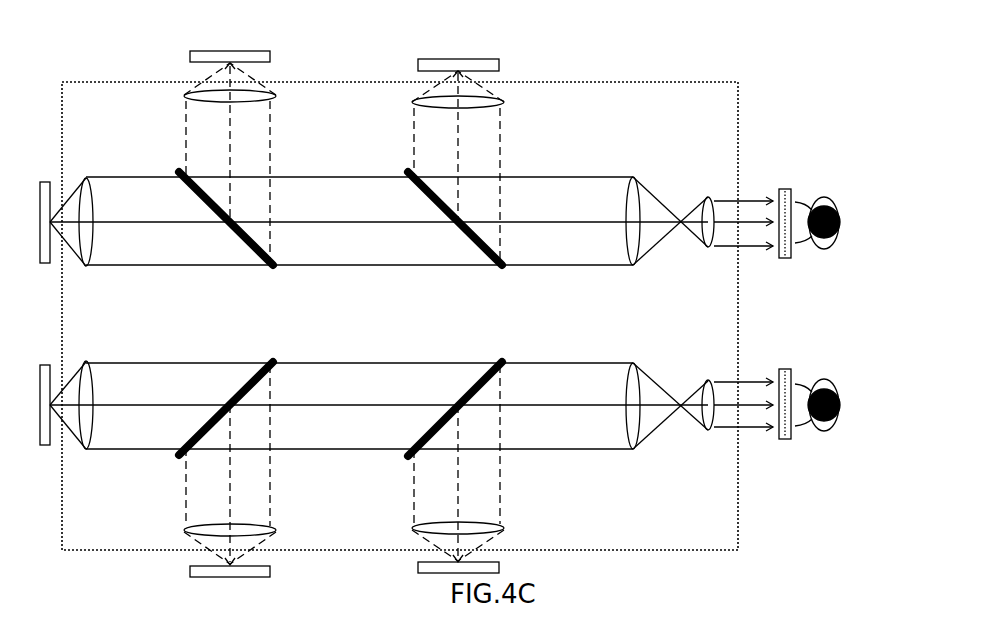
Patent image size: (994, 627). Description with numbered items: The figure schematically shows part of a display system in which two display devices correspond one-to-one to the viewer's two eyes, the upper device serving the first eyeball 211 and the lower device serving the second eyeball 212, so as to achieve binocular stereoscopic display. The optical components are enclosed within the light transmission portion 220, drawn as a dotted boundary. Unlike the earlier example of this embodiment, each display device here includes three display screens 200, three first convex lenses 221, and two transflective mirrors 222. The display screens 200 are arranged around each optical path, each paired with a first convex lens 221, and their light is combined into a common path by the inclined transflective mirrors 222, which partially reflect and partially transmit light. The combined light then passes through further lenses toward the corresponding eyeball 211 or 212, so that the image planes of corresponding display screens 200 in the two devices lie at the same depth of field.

The light transmission portion 220 is at (397, 303).
The first convex lens 221 is at (193, 113).
The display screen 200 is at (443, 52).
The transflective mirror 222 is at (213, 390).
The first eyeball 211 is at (854, 215).
The second eyeball 212 is at (854, 414).